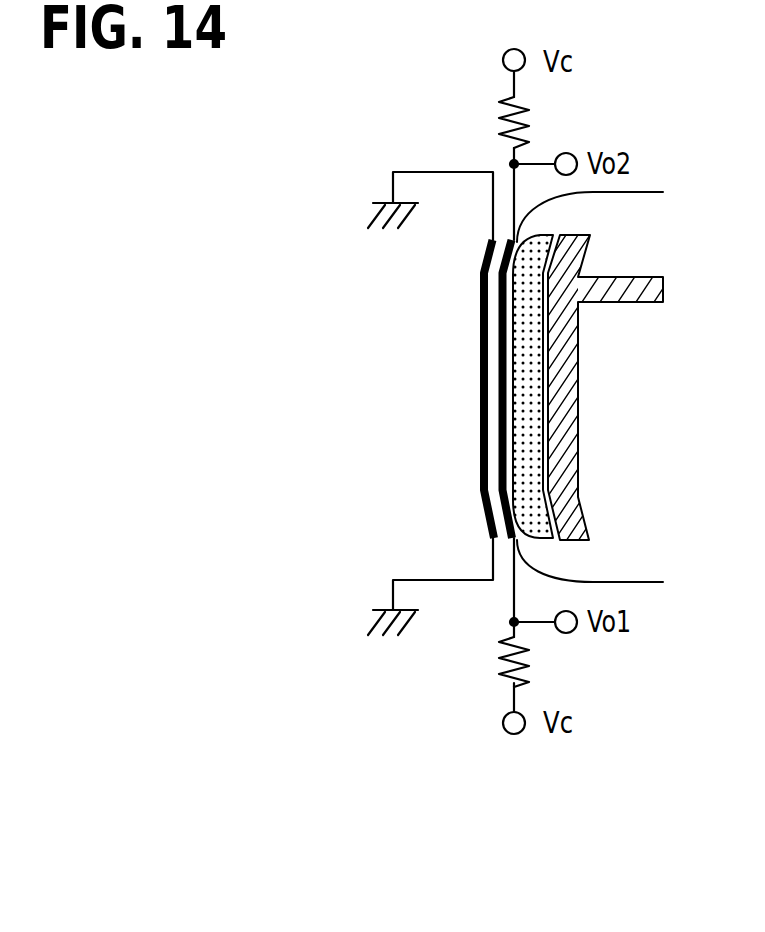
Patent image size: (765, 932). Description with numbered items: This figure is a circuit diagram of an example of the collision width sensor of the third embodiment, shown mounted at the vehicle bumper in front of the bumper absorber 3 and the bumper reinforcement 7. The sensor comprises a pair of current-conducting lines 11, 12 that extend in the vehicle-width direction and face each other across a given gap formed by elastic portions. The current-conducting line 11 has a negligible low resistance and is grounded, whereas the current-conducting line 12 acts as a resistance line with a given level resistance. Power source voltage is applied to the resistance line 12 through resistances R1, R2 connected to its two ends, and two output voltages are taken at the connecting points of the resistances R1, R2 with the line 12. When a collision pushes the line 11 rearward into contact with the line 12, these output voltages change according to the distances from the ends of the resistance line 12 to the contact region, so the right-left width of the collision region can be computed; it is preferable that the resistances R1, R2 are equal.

The current-conducting line 11 is at (481, 298).
The current-conducting line 12 is at (501, 423).
The bumper absorber 3 is at (532, 383).
The bumper reinforcement 7 is at (567, 452).
The resistance R1 is at (497, 658).
The resistance R2 is at (497, 110).